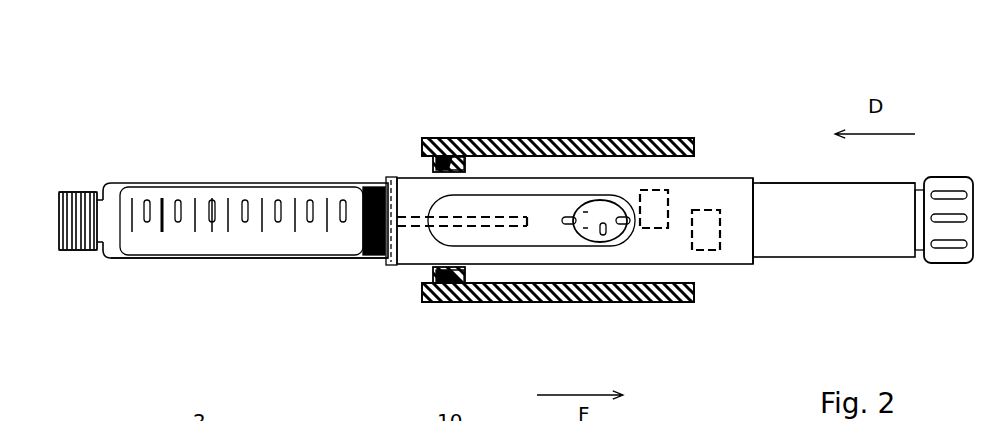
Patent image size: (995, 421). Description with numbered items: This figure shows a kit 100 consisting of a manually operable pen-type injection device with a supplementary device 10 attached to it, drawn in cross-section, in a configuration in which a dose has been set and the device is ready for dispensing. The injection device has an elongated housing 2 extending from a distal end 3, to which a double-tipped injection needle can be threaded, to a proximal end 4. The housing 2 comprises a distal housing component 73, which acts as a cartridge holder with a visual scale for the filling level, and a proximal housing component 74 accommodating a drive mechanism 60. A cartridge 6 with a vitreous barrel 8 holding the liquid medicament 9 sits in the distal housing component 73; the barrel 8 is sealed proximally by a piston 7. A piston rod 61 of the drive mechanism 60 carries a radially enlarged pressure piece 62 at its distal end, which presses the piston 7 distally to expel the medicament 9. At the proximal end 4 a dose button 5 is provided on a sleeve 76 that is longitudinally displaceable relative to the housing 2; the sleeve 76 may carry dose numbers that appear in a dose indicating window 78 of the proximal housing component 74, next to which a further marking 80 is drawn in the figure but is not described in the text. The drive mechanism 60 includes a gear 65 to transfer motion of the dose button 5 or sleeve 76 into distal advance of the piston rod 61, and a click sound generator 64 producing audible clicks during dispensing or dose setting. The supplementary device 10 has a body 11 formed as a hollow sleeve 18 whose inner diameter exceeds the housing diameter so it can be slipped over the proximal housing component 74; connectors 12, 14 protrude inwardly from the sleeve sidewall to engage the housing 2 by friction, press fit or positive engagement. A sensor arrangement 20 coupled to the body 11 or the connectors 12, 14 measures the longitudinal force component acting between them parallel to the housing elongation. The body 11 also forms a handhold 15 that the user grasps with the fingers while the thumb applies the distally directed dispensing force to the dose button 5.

The kit 100 is at (303, 92).
The distal end 3 is at (84, 160).
The elongated housing 2 is at (350, 157).
The cartridge 6 is at (171, 198).
The piston 7 is at (380, 183).
The liquid medicament 9 is at (222, 226).
The vitreous barrel 8 is at (265, 248).
The distal housing component 73 is at (163, 260).
The pressure piece 62 is at (390, 262).
The supplementary device 10 is at (523, 75).
The body 11 is at (476, 138).
The hollow sleeve 18 is at (560, 302).
The connector 12 is at (435, 138).
The connector 14 is at (436, 302).
The sensor arrangement 20 is at (457, 138).
The drive mechanism 60 is at (495, 212).
The piston rod 61 is at (503, 226).
The dose indicating window 78 is at (600, 234).
The button indicator 80 is at (603, 229).
The click sound generator 64 is at (648, 228).
The gear 65 is at (705, 250).
The proximal housing component 74 is at (742, 262).
The sleeve 76 is at (822, 245).
The dose button 5 is at (946, 255).
The handhold 15 is at (598, 100).
The proximal end 4 is at (783, 120).